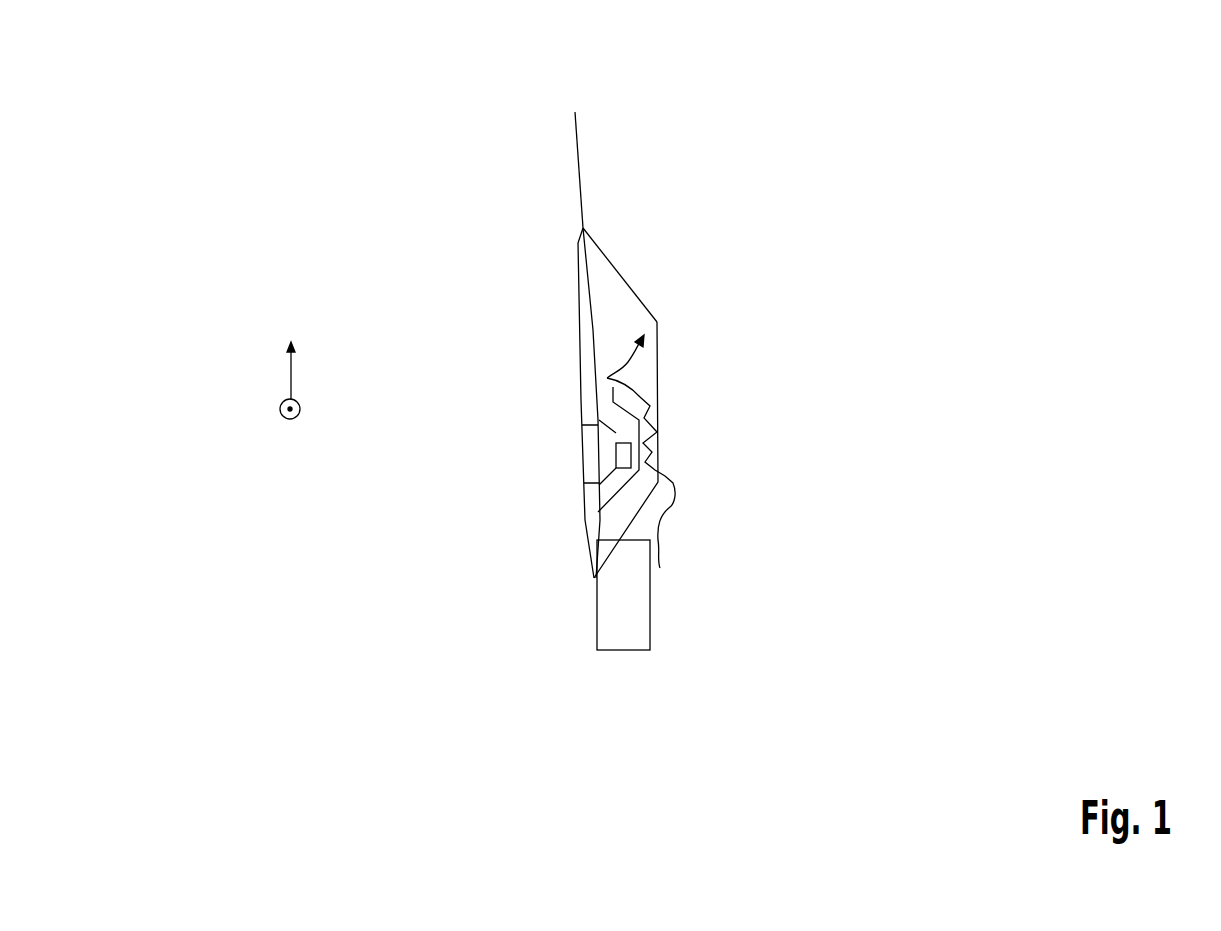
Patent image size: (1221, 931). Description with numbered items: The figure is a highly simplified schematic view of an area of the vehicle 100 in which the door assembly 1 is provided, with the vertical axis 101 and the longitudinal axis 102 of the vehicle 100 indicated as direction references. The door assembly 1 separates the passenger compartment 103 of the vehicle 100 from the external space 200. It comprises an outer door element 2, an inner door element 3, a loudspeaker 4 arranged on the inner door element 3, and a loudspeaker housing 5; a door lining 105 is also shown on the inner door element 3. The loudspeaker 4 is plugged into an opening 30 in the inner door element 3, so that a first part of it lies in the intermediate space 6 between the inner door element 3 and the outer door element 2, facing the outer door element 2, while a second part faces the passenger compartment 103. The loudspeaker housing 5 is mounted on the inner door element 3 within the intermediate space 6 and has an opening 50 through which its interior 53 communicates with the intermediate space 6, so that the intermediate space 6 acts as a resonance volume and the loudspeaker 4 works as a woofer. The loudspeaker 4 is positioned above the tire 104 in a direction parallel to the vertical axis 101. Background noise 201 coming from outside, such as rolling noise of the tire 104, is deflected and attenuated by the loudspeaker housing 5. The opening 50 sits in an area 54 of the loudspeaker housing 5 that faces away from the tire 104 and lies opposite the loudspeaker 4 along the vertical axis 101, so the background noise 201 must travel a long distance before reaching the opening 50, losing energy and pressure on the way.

The vehicle 100 is at (444, 100).
The door assembly 1 is at (655, 245).
The outer door element 2 is at (640, 298).
The inner door element 3 is at (593, 293).
The intermediate space 6 is at (620, 327).
The opening in loudspeaker housing 50 is at (605, 390).
The interior of the loudspeaker housing 53 is at (616, 433).
The area of loudspeaker housing 54 is at (630, 397).
The opening in inner door element 30 is at (590, 440).
The loudspeaker 4 is at (606, 460).
The door lining 105 is at (590, 540).
The background noise 201 is at (670, 505).
The loudspeaker housing 5 is at (632, 500).
The tire 104 is at (630, 650).
The passenger compartment 103 is at (435, 326).
The external space 200 is at (856, 341).
The vertical axis of vehicle 101 is at (289, 372).
The longitudinal axis of vehicle 102 is at (292, 420).